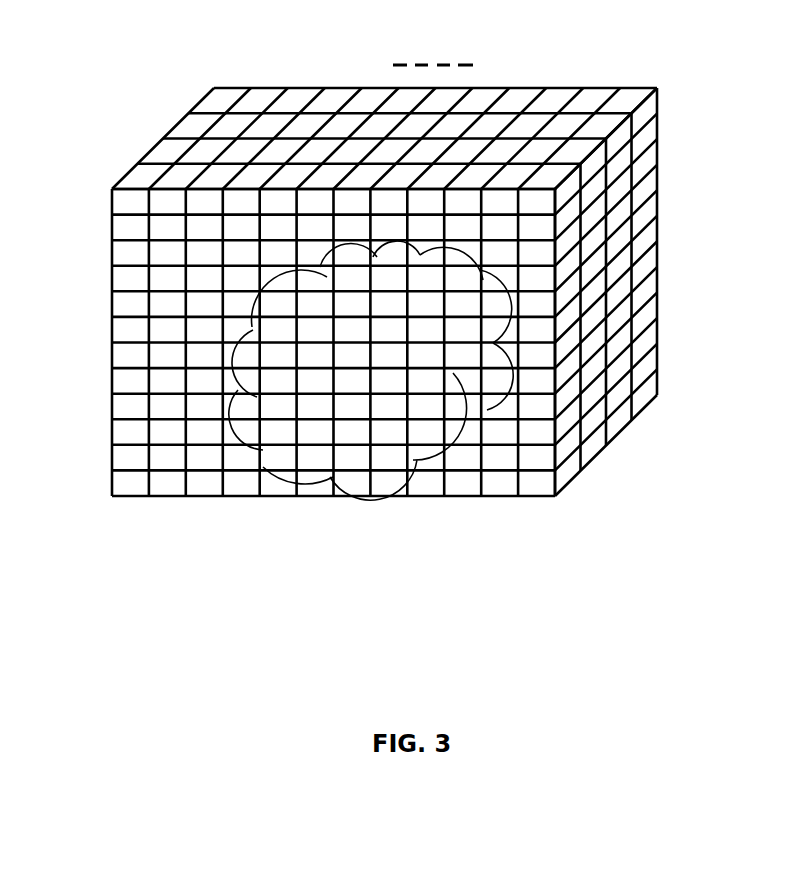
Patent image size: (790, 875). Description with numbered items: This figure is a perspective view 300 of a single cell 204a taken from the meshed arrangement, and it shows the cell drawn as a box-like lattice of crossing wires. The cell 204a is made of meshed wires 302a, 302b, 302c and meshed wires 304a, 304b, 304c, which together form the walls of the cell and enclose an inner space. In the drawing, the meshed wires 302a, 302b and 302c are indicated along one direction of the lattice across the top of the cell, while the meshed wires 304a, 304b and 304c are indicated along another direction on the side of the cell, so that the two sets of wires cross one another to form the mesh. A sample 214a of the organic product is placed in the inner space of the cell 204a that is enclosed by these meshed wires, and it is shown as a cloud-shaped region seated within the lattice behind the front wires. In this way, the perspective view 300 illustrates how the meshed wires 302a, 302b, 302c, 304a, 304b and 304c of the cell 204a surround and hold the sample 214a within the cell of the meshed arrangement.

The perspective view 300 is at (304, 568).
The cell 204a is at (112, 268).
The sample 214a is at (240, 360).
The meshed wire 302a is at (246, 100).
The meshed wire 302b is at (285, 102).
The meshed wire 302c is at (600, 108).
The meshed wire 304a is at (583, 455).
The meshed wire 304b is at (605, 430).
The meshed wire 304c is at (630, 403).